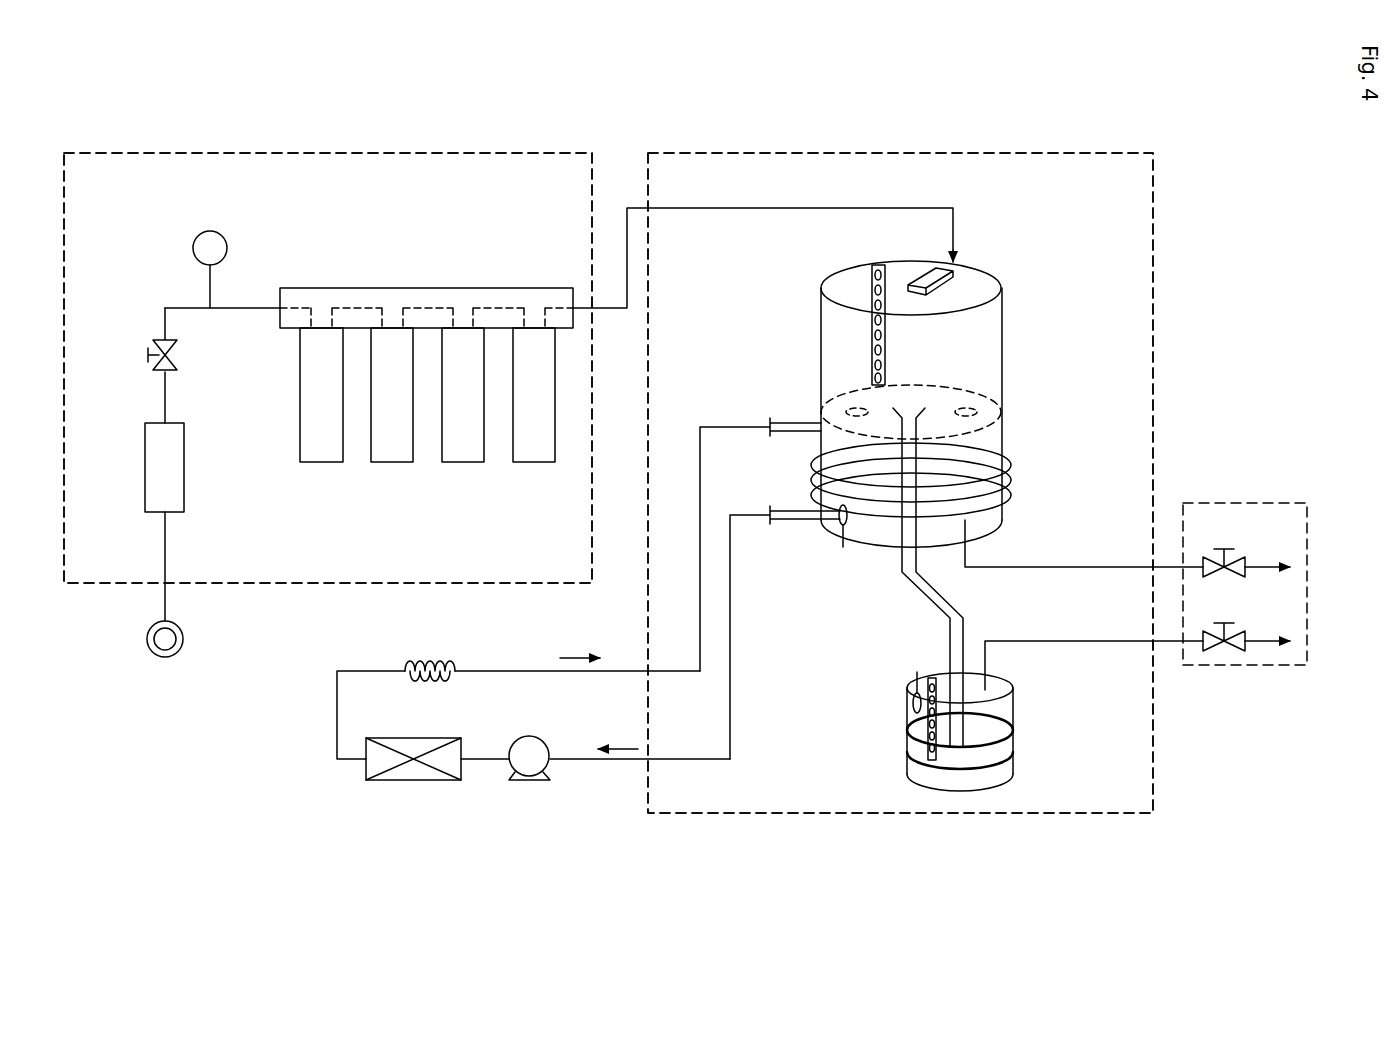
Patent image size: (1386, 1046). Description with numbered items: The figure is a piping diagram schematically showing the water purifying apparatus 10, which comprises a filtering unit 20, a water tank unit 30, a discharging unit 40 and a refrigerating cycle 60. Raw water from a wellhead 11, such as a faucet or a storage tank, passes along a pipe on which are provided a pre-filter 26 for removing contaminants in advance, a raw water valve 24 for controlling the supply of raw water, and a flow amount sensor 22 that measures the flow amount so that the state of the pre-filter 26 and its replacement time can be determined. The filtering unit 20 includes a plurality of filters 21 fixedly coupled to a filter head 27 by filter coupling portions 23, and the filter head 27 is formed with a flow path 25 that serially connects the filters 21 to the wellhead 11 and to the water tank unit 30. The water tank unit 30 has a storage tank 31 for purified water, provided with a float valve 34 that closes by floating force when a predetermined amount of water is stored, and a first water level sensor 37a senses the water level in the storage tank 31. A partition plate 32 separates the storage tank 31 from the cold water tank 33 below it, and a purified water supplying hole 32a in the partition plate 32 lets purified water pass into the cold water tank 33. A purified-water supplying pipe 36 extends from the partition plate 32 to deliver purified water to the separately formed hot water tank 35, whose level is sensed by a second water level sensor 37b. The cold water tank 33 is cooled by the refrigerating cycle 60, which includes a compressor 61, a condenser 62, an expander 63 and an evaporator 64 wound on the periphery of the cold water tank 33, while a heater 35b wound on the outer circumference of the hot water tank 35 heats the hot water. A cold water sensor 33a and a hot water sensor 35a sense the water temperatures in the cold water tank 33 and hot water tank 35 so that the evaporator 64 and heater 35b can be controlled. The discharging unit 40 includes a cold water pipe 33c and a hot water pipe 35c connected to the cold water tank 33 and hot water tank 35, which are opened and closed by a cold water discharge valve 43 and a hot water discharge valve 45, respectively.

The water purifying apparatus 10 is at (106, 78).
The wellhead 11 is at (147, 639).
The filtering unit 20 is at (298, 153).
The filters 21 is at (534, 462).
The flow amount sensor 22 is at (210, 231).
The filter coupling portions 23 is at (534, 328).
The raw water valve 24 is at (156, 344).
The flow path 25 is at (357, 308).
The pre-filter 26 is at (145, 466).
The filter head 27 is at (390, 288).
The water tank unit 30 is at (900, 153).
The storage tank 31 is at (978, 335).
The partition plate 32 is at (975, 400).
The purified water supplying hole 32a is at (852, 408).
The cold water tank 33 is at (977, 445).
The cold water sensor 33a is at (840, 518).
The cold water pipe 33c is at (1056, 567).
The float valve 34 is at (965, 278).
The hot water tank 35 is at (996, 703).
The hot water sensor 35a is at (913, 702).
The heater 35b is at (907, 752).
The hot water pipe 35c is at (1065, 641).
The purified-water supplying pipe 36 is at (902, 524).
The first water level sensor 37a is at (877, 265).
The second water level sensor 37b is at (930, 678).
The discharging unit 40 is at (1243, 503).
The cold water discharge valve 43 is at (1235, 558).
The hot water discharge valve 45 is at (1235, 632).
The refrigerating cycle 60 is at (298, 802).
The compressor 61 is at (530, 780).
The condenser 62 is at (414, 780).
The expander 63 is at (428, 659).
The evaporator 64 is at (812, 472).